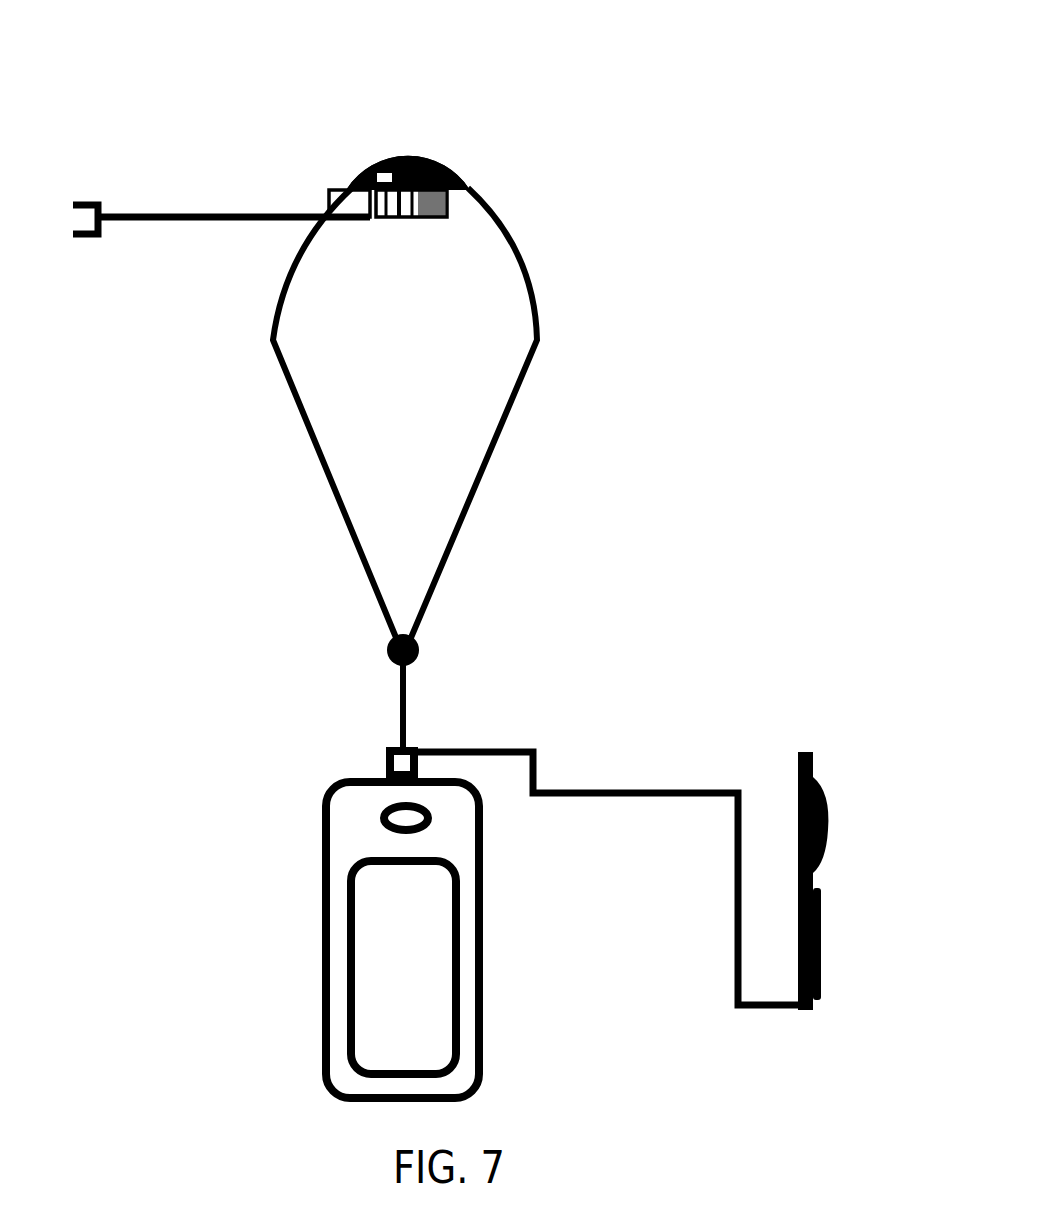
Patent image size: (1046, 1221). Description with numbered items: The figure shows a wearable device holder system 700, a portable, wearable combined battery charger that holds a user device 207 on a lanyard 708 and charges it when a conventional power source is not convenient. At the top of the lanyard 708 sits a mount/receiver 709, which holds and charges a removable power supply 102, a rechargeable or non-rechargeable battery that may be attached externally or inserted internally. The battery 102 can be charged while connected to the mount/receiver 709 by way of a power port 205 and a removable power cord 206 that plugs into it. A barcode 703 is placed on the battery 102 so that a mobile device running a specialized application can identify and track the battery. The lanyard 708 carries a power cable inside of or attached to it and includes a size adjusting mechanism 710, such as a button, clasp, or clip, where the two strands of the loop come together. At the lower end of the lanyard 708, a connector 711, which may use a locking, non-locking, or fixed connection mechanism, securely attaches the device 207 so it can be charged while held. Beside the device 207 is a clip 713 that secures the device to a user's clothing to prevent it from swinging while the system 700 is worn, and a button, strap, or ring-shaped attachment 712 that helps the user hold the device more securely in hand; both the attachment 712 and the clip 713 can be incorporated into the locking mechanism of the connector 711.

The removable power supply 102 is at (405, 152).
The power port 205 is at (360, 178).
The removable power cord 206 is at (200, 232).
The user device 207 is at (489, 962).
The wearable device holder system 700 is at (728, 231).
The barcode 703 is at (431, 222).
The lanyard 708 is at (320, 490).
The mount/receiver 709 is at (470, 178).
The size adjusting mechanism 710 is at (383, 650).
The connector 711 is at (533, 752).
The ring-shaped attachment 712 is at (829, 782).
The clip 713 is at (830, 968).